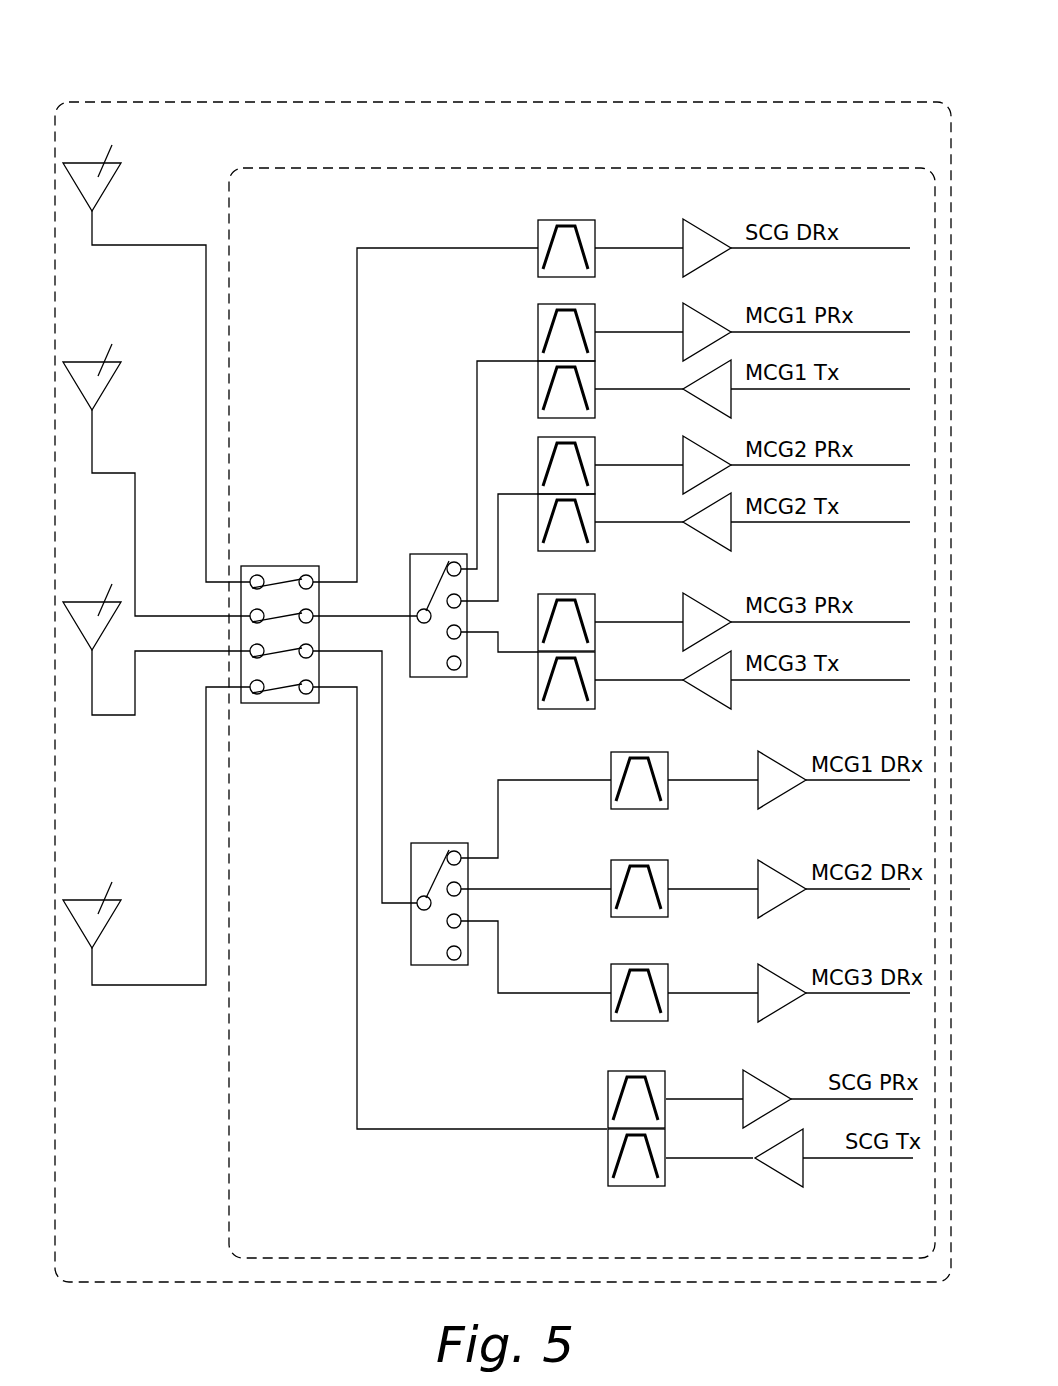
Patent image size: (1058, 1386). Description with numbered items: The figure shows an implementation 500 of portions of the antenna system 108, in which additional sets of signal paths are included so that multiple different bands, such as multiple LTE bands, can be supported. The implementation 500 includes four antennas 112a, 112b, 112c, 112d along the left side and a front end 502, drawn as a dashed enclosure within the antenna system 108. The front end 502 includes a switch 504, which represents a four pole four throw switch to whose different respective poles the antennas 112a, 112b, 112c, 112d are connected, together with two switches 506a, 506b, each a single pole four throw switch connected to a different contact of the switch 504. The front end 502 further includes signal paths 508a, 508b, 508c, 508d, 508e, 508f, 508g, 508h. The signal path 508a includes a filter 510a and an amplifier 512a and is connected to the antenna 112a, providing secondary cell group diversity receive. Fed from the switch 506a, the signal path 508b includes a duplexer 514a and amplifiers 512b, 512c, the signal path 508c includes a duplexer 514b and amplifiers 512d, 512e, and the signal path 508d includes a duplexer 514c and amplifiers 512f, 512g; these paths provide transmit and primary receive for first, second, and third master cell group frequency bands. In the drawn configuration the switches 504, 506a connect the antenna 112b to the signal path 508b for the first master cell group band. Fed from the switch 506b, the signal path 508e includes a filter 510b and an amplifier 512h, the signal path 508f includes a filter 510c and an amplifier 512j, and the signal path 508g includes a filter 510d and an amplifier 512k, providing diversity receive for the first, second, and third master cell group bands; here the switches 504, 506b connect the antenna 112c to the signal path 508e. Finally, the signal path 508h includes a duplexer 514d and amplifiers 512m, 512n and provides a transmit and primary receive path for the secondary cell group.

The implementation 500 is at (808, 62).
The antenna system 108 is at (282, 100).
The front end 502 is at (413, 165).
The antenna 112a is at (156, 348).
The antenna 112b is at (156, 462).
The antenna 112c is at (156, 632).
The antenna 112d is at (156, 836).
The switch 504 is at (279, 565).
The switch 506a is at (430, 560).
The switch 506b is at (433, 848).
The signal path 508a is at (374, 247).
The signal path 508b is at (482, 358).
The signal path 508c is at (528, 492).
The signal path 508d is at (515, 657).
The signal path 508e is at (517, 778).
The signal path 508f is at (557, 888).
The signal path 508g is at (550, 990).
The signal path 508h is at (480, 1128).
The filter 510a is at (546, 233).
The filter 510b is at (657, 757).
The filter 510c is at (665, 877).
The filter 510d is at (665, 973).
The amplifier 512a is at (697, 232).
The amplifier 512b is at (693, 324).
The amplifier 512c is at (708, 387).
The amplifier 512d is at (690, 457).
The amplifier 512e is at (703, 520).
The amplifier 512f is at (688, 612).
The amplifier 512g is at (703, 676).
The amplifier 512h is at (777, 765).
The amplifier 512j is at (777, 877).
The amplifier 512k is at (773, 985).
The amplifier 512m is at (763, 1093).
The amplifier 512n is at (798, 1165).
The duplexer 514a is at (542, 317).
The duplexer 514b is at (530, 437).
The duplexer 514c is at (548, 602).
The duplexer 514d is at (613, 1087).